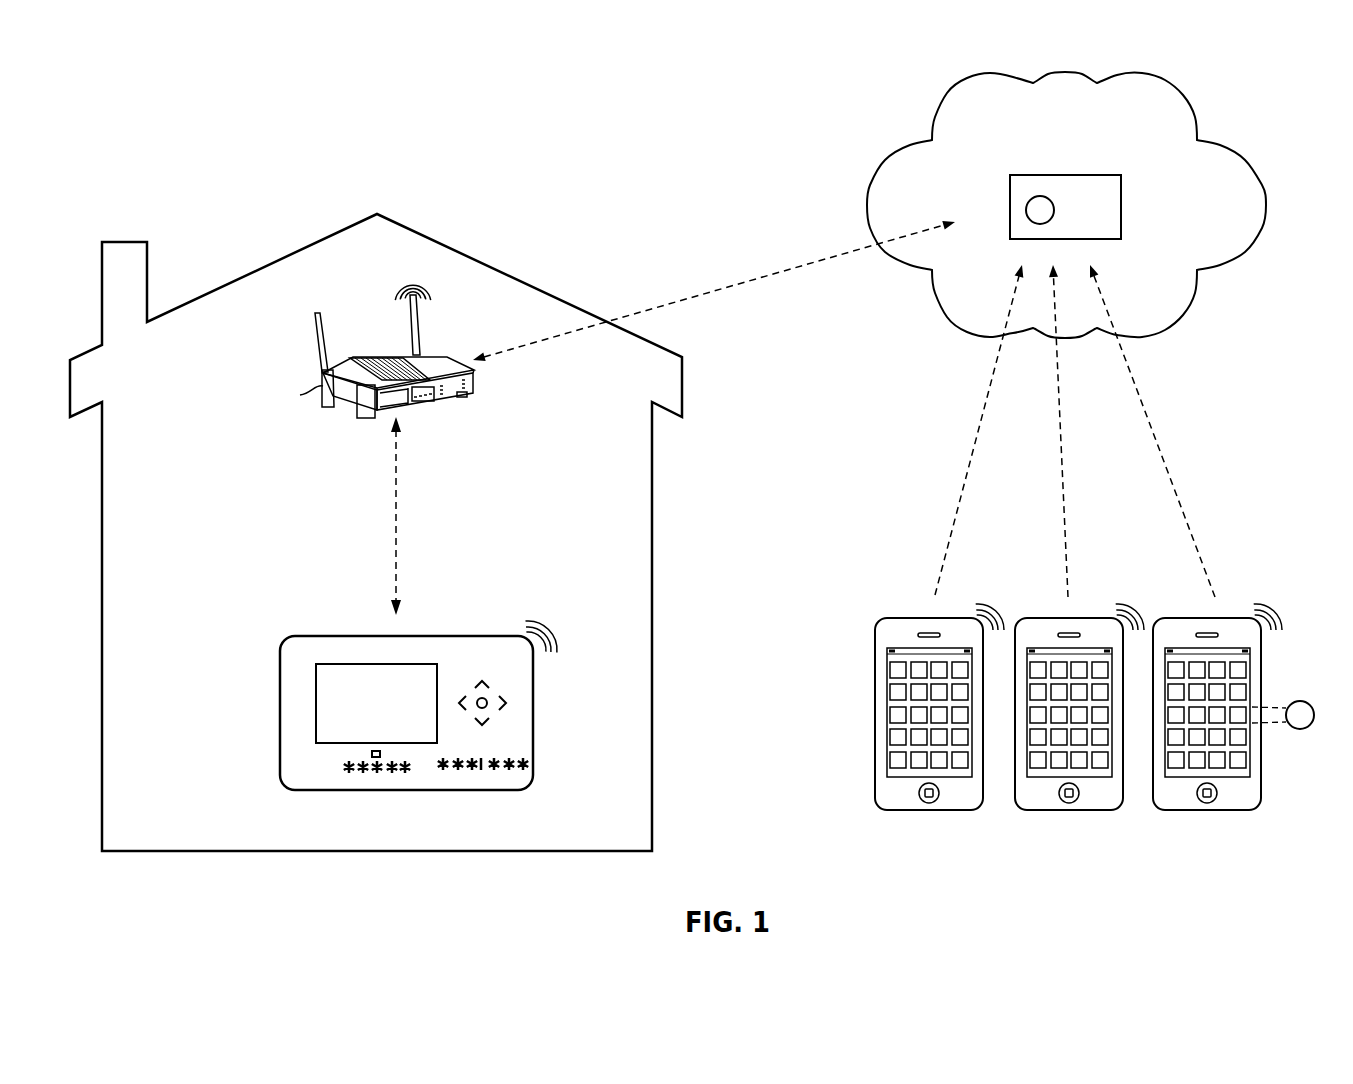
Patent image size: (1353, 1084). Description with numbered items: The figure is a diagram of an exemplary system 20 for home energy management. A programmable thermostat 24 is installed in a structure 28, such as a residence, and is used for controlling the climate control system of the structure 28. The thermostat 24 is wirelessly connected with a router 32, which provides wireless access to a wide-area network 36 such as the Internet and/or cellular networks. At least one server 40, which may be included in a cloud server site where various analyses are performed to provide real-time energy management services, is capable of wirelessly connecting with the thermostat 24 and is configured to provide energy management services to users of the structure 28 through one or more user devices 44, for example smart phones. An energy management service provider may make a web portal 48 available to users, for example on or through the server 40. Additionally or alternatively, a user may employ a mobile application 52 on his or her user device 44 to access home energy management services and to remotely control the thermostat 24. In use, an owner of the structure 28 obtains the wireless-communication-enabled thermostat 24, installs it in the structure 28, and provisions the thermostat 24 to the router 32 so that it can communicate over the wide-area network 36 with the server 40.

The system 20 is at (590, 82).
The programmable thermostat 24 is at (336, 635).
The structure 28 is at (261, 268).
The router 32 is at (321, 393).
The wide-area network 36 is at (998, 73).
The server 40 is at (1065, 174).
The user device 44 is at (1243, 812).
The web portal 48 is at (1026, 209).
The mobile application 52 is at (1303, 729).